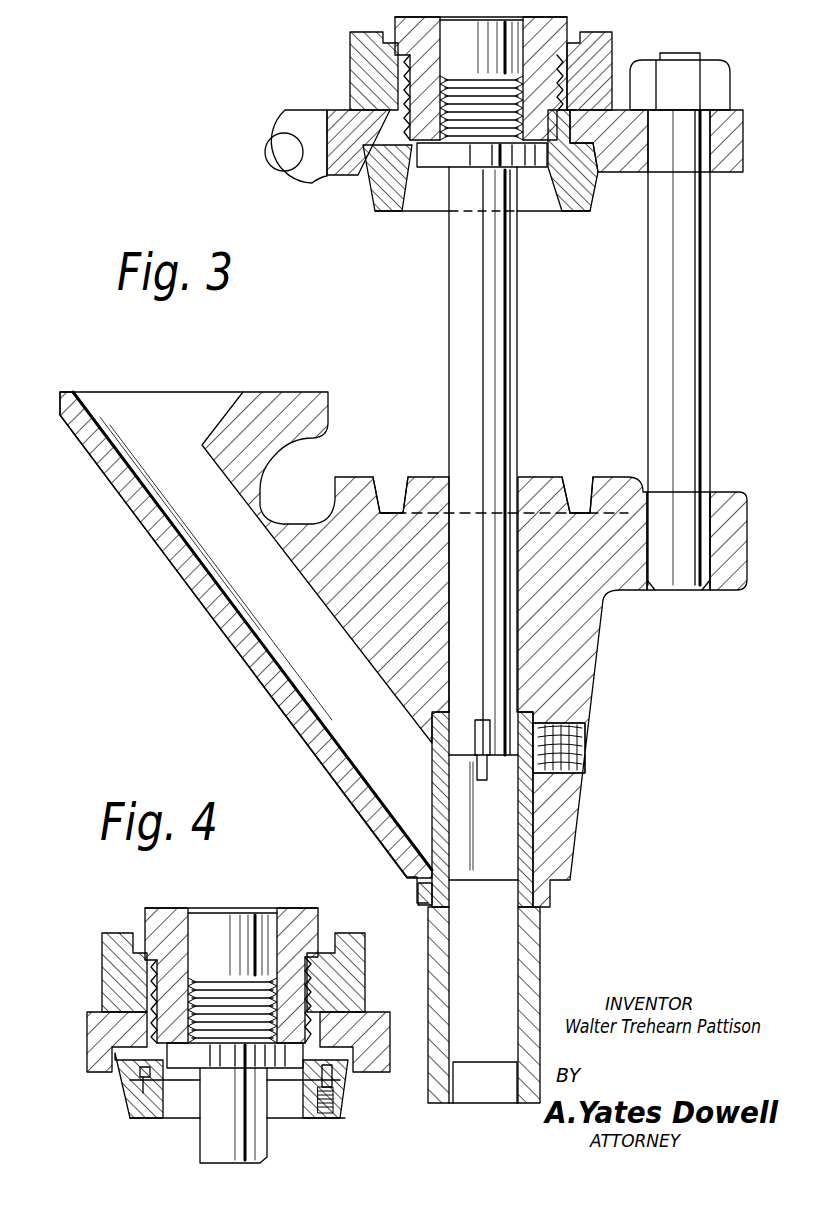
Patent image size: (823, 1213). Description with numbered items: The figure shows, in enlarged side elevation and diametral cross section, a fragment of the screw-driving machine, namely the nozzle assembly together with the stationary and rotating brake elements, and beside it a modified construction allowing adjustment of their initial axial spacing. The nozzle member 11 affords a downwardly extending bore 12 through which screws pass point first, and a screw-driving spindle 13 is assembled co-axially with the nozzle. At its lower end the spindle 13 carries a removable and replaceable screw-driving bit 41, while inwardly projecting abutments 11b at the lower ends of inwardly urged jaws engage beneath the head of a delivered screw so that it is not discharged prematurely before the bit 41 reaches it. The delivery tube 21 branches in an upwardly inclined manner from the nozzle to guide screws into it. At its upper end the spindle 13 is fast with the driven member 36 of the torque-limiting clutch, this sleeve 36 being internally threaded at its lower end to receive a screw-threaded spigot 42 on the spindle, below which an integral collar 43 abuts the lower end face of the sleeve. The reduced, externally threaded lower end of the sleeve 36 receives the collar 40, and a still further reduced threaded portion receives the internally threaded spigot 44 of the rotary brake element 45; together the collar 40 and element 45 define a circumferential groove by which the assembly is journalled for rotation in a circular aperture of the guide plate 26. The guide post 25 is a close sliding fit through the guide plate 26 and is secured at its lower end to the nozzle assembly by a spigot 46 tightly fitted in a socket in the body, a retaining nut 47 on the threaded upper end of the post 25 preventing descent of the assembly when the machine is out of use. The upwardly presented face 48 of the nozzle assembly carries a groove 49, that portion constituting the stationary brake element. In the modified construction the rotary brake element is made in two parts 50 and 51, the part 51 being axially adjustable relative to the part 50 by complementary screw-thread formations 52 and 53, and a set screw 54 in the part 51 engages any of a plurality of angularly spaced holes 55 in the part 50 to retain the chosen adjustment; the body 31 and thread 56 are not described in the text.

In FIG. 3, the nozzle member 11 is at (532, 952).
In FIG. 3, the inwardly projecting abutments 11b is at (479, 1088).
In FIG. 3, the bore 12 is at (502, 857).
In FIG. 3, the screw-driving spindle 13 is at (467, 355).
In FIG. 4, the screw-driving spindle 13 is at (250, 1148).
In FIG. 3, the delivery tube 21 is at (158, 403).
In FIG. 3, the guide post 25 is at (707, 355).
In FIG. 3, the guide plate 26 is at (627, 157).
In FIG. 4, the guide plate 26 is at (373, 1020).
In FIG. 3, the body 31 is at (293, 397).
In FIG. 3, the driven member 36 is at (567, 30).
In FIG. 4, the driven member 36 is at (295, 918).
In FIG. 3, the collar 40 is at (357, 67).
In FIG. 3, the screw-driving bit 41 is at (483, 735).
In FIG. 3, the screw-threaded spigot 42 is at (460, 130).
In FIG. 4, the screw-threaded spigot 42 is at (235, 1055).
In FIG. 3, the integral collar 43 is at (525, 160).
In FIG. 3, the internally threaded spigot 44 is at (353, 153).
In FIG. 3, the rotary brake element 45 is at (373, 197).
In FIG. 3, the spigot 46 is at (672, 550).
In FIG. 3, the retaining nut 47 is at (715, 80).
In FIG. 3, the upwardly presented face 48 is at (537, 480).
In FIG. 3, the groove 49 is at (620, 450).
In FIG. 4, the part of rotary brake element 50 is at (147, 1020).
In FIG. 4, the part of rotary brake element 51 is at (127, 1103).
In FIG. 4, the screw-thread formation 52 is at (333, 1070).
In FIG. 4, the screw-thread formation 53 is at (133, 1067).
In FIG. 4, the set screw 54 is at (322, 1120).
In FIG. 4, the angularly spaced holes 55 is at (148, 1093).
In FIG. 3, the thread 56 is at (580, 745).